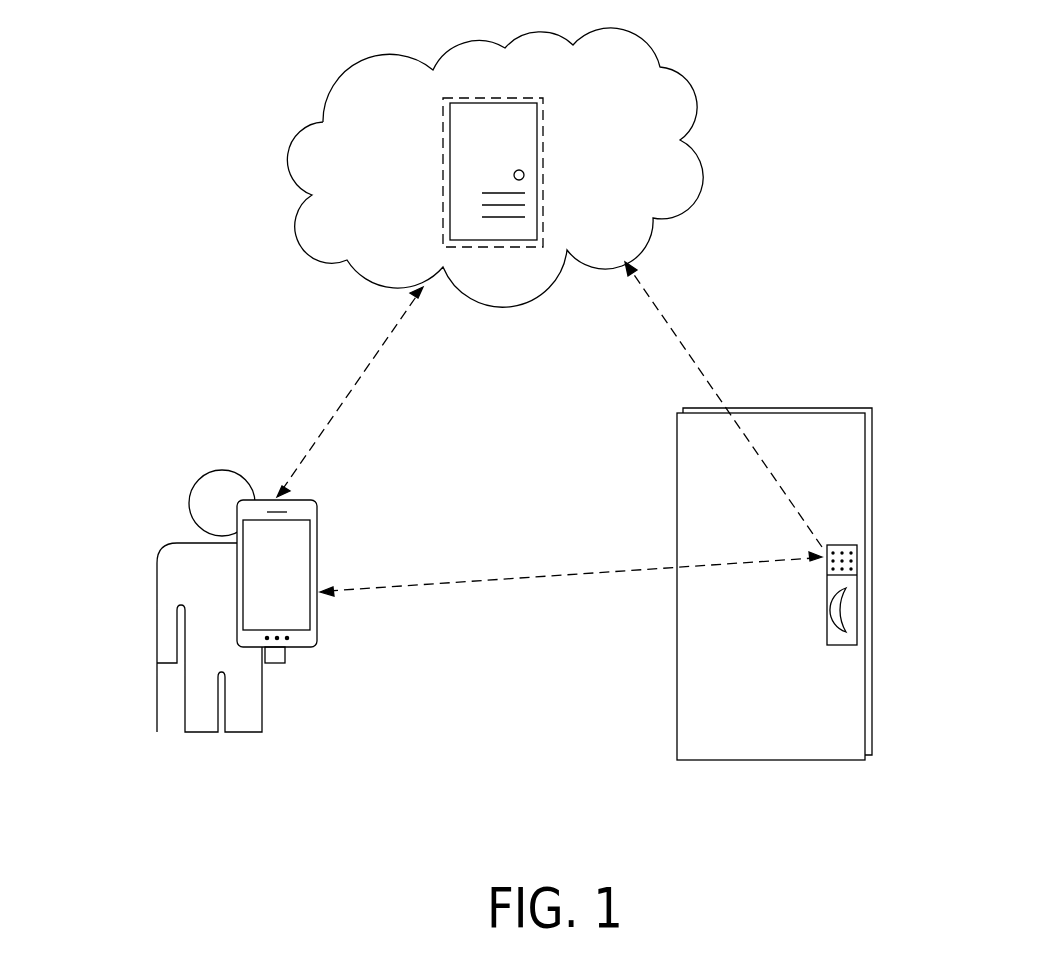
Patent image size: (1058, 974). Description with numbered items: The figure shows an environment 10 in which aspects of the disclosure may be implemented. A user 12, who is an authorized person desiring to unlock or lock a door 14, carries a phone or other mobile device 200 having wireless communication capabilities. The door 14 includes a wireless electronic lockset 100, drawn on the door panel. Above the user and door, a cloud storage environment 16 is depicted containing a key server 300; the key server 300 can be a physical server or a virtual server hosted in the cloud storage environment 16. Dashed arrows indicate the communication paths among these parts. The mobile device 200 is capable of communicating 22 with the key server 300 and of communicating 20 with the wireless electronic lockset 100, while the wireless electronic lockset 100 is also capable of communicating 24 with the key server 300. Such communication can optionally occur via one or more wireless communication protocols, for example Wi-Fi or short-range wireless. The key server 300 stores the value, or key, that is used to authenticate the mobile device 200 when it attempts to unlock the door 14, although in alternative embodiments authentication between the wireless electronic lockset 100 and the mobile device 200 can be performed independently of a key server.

The environment 10 is at (108, 820).
The user 12 is at (167, 557).
The door 14 is at (865, 423).
The cloud storage environment 16 is at (692, 95).
The communicating 20 is at (572, 573).
The communicating 22 is at (318, 440).
The communicating 24 is at (688, 350).
The wireless electronic lockset 100 is at (853, 555).
The mobile device 200 is at (302, 517).
The key server 300 is at (528, 172).